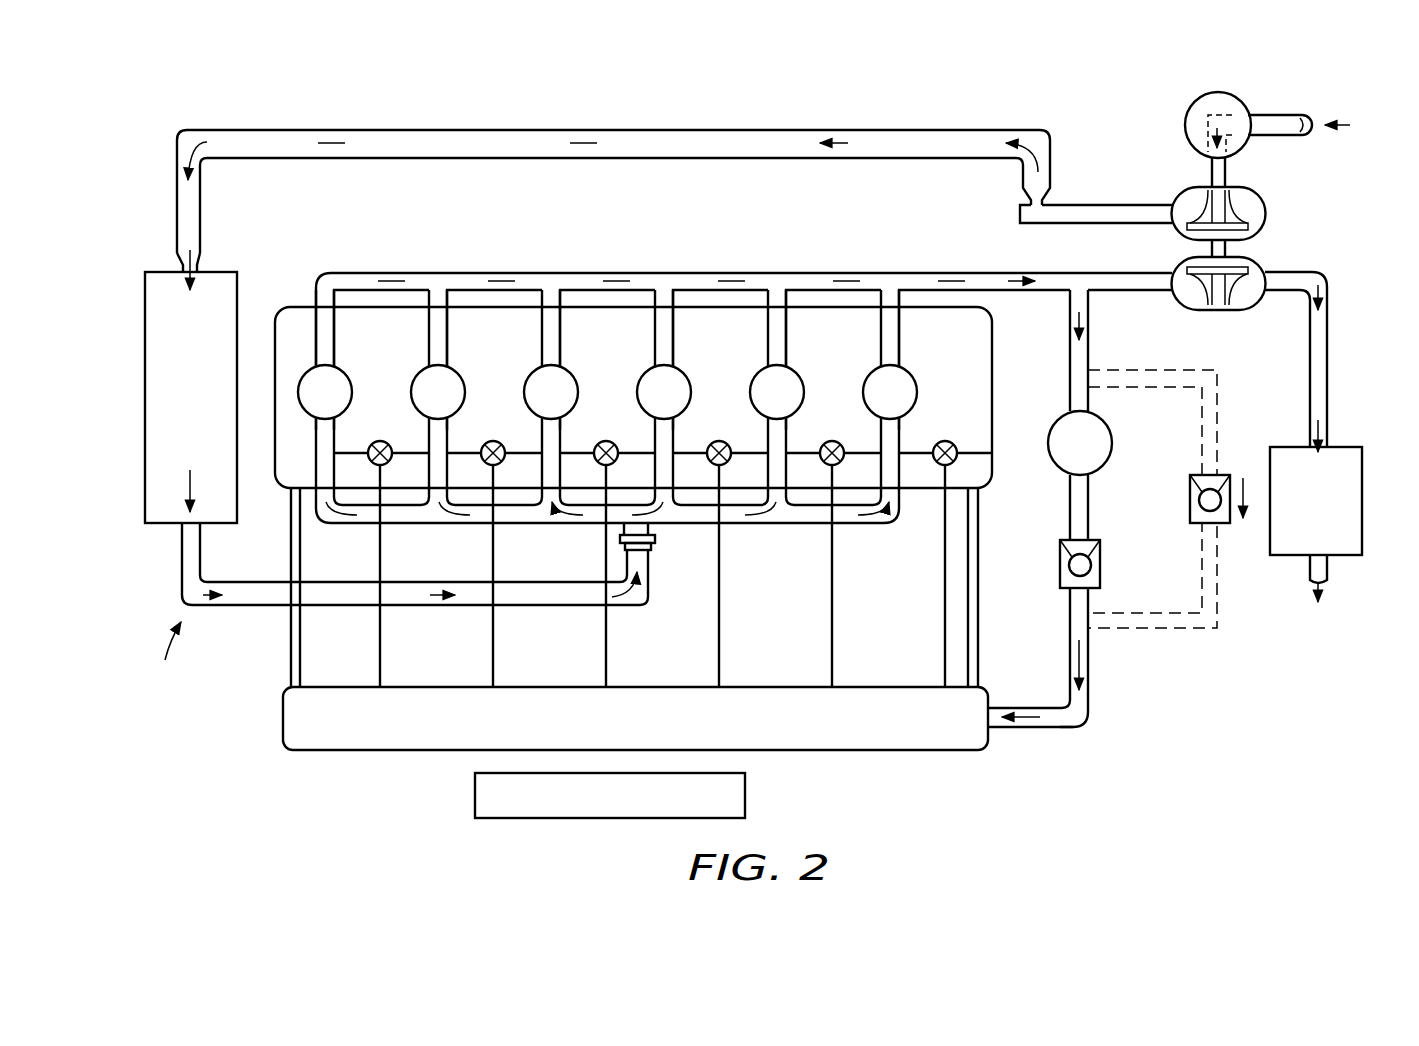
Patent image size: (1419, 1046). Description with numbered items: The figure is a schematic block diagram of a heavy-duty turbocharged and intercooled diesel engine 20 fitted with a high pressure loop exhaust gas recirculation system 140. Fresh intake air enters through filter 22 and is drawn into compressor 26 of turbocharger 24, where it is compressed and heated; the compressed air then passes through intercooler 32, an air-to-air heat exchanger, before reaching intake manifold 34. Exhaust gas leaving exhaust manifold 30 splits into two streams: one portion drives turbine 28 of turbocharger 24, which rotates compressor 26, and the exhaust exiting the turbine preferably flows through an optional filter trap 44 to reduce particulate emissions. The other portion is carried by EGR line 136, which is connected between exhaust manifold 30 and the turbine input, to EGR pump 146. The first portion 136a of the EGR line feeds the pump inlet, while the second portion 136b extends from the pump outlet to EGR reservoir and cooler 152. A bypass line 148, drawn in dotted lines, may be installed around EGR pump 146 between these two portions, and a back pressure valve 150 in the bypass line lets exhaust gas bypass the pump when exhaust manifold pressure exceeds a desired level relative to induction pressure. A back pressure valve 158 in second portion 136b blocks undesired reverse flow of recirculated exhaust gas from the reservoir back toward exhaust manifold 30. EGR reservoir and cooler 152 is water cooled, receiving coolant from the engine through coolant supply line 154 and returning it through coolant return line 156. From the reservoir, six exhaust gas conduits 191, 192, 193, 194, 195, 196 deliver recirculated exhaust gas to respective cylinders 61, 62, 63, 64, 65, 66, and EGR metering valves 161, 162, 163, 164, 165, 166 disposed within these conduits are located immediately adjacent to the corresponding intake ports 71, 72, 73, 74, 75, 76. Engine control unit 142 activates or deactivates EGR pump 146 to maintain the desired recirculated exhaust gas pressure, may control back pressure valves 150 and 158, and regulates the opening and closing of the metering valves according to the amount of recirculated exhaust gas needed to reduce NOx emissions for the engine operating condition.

The engine 20 is at (999, 373).
The filter 22 is at (1185, 126).
The turbocharger 24 is at (1277, 250).
The compressor 26 is at (1253, 192).
The turbine 28 is at (1237, 307).
The exhaust manifold 30 is at (862, 270).
The intercooler 32 is at (160, 271).
The intake manifold 34 is at (758, 526).
The filter trap 44 is at (1362, 495).
The cylinder 61 is at (339, 370).
The cylinder 62 is at (452, 370).
The cylinder 63 is at (565, 370).
The cylinder 64 is at (678, 370).
The cylinder 65 is at (791, 370).
The cylinder 66 is at (904, 370).
The intake port 71 is at (316, 430).
The intake port 72 is at (429, 430).
The intake port 73 is at (542, 430).
The intake port 74 is at (655, 430).
The intake port 75 is at (768, 430).
The intake port 76 is at (881, 430).
The EGR line 136 is at (1063, 730).
The first portion of EGR line 136a is at (1088, 330).
The second portion of EGR line 136b is at (1088, 655).
The exhaust gas recirculation system 140 is at (1171, 704).
The engine control unit 142 is at (745, 797).
The EGR pump 146 is at (1112, 440).
The bypass line 148 is at (1215, 634).
The back pressure valve 150 is at (1190, 505).
The EGR reservoir and cooler 152 is at (370, 750).
The coolant supply line 154 is at (290, 630).
The coolant return line 156 is at (978, 530).
The back pressure valve 158 is at (1058, 572).
The EGR metering valve 161 is at (381, 440).
The EGR metering valve 162 is at (494, 440).
The EGR metering valve 163 is at (607, 440).
The EGR metering valve 164 is at (720, 440).
The EGR metering valve 165 is at (833, 440).
The EGR metering valve 166 is at (946, 440).
The exhaust gas conduit 191 is at (380, 637).
The exhaust gas conduit 192 is at (493, 637).
The exhaust gas conduit 193 is at (606, 637).
The exhaust gas conduit 194 is at (719, 637).
The exhaust gas conduit 195 is at (832, 637).
The exhaust gas conduit 196 is at (945, 560).